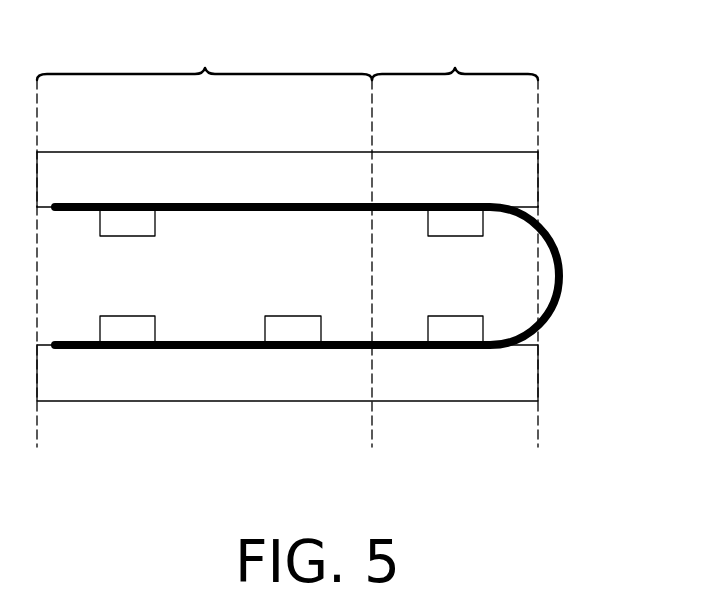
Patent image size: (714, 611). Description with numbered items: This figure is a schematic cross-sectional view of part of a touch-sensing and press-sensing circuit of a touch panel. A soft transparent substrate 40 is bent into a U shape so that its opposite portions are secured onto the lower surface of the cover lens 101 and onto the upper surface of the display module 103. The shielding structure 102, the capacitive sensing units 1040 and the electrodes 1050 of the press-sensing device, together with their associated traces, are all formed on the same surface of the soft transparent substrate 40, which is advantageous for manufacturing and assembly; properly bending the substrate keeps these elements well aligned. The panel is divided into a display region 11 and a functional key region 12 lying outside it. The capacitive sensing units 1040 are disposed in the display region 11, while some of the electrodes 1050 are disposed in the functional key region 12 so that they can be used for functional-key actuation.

The display region 11 is at (204, 55).
The functional key region 12 is at (455, 55).
The soft transparent substrate 40 is at (563, 276).
The cover lens 101 is at (455, 178).
The shielding structure 102 is at (438, 223).
The display module 103 is at (120, 370).
The capacitive sensing units 1040 is at (287, 335).
The electrodes 1050 is at (430, 330).